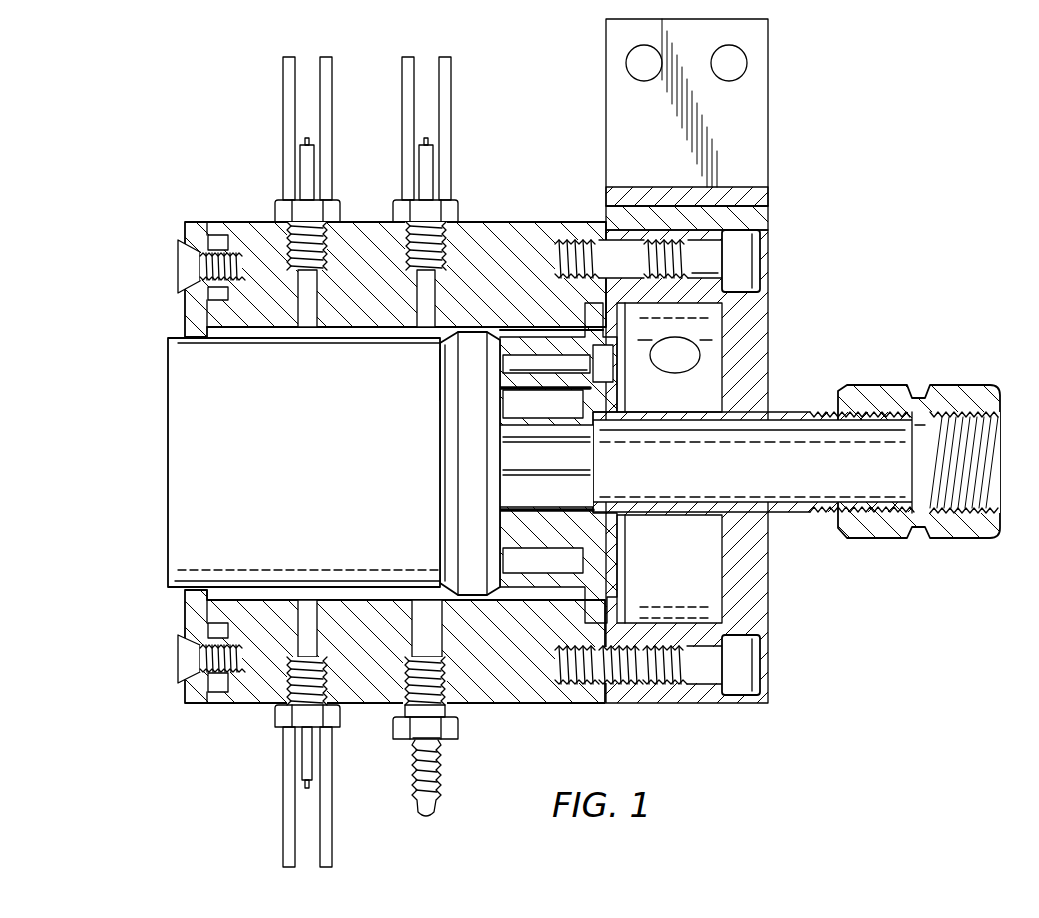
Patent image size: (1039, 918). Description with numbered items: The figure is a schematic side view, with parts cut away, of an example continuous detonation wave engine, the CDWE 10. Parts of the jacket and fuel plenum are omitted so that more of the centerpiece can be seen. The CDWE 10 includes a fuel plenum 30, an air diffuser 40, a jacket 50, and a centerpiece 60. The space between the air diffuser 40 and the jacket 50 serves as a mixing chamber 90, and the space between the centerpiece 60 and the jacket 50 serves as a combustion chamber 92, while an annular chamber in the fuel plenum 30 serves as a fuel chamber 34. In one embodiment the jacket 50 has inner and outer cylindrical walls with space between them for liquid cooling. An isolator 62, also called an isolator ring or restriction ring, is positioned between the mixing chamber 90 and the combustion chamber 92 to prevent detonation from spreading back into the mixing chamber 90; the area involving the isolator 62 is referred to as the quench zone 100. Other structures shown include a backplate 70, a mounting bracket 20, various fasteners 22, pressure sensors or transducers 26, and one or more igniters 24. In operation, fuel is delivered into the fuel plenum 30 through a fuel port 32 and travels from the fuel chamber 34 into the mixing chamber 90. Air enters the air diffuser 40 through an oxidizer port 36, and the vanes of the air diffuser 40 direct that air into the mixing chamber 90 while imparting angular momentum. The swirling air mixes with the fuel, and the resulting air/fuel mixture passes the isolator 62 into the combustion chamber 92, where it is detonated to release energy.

The CDWE 10 is at (970, 140).
The mounting bracket 20 is at (770, 92).
The fasteners 22 is at (178, 267).
The igniter 24 is at (413, 795).
The pressure sensors or transducers 26 is at (285, 817).
The fuel plenum 30 is at (762, 308).
The fuel port 32 is at (668, 355).
The fuel chamber 34 is at (710, 357).
The oxidizer port 36 is at (793, 478).
The air diffuser 40 is at (608, 538).
The jacket 50 is at (527, 707).
The centerpiece 60 is at (168, 423).
The isolator 62 is at (440, 462).
The backplate 70 is at (188, 318).
The mixing chamber 90 is at (547, 327).
The combustion chamber 92 is at (340, 332).
The quench zone 100 is at (417, 368).